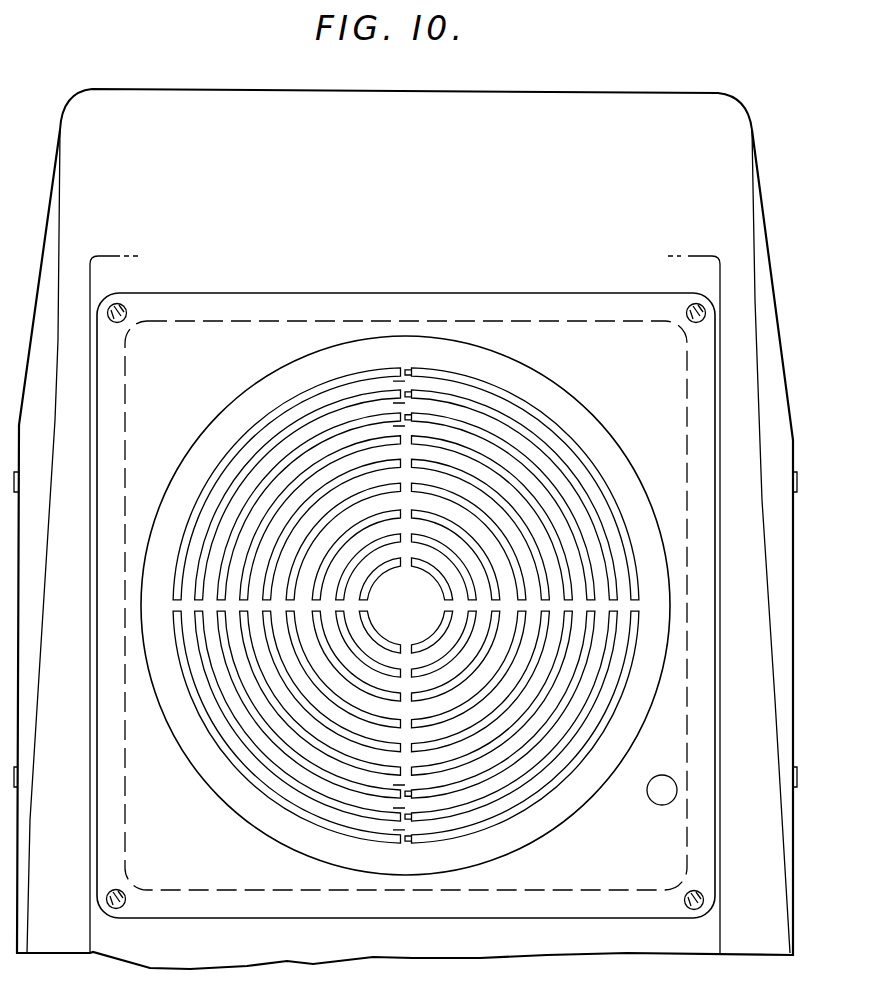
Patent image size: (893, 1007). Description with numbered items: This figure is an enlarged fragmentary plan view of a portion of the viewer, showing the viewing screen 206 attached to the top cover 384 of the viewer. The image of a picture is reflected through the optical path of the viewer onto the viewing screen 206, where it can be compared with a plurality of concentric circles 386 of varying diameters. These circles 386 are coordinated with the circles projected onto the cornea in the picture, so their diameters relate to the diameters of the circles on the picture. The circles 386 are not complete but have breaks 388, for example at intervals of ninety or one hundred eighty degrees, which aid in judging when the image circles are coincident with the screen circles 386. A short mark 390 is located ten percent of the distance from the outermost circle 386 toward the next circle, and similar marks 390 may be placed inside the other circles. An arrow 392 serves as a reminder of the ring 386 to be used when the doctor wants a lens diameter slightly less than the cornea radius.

The top cover 384 is at (735, 547).
The viewing screen 206 is at (693, 600).
The arrow 392 is at (646, 607).
The concentric circles 386 is at (538, 510).
The breaks 388 is at (406, 541).
The short mark 390 is at (413, 423).